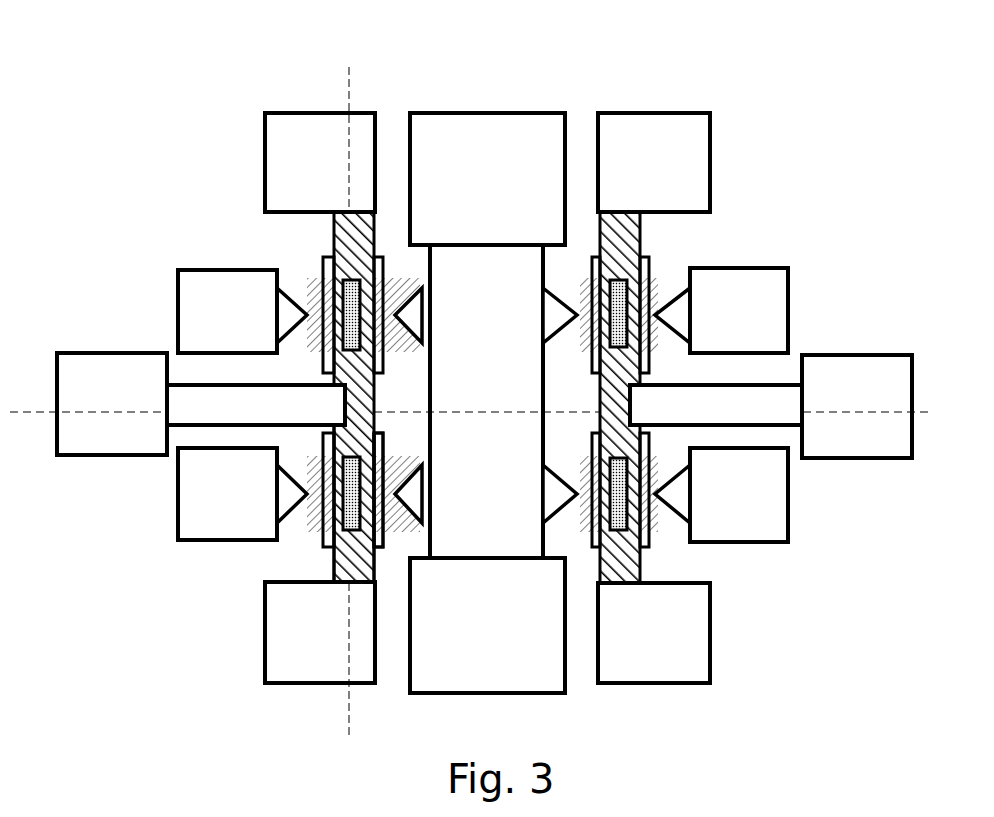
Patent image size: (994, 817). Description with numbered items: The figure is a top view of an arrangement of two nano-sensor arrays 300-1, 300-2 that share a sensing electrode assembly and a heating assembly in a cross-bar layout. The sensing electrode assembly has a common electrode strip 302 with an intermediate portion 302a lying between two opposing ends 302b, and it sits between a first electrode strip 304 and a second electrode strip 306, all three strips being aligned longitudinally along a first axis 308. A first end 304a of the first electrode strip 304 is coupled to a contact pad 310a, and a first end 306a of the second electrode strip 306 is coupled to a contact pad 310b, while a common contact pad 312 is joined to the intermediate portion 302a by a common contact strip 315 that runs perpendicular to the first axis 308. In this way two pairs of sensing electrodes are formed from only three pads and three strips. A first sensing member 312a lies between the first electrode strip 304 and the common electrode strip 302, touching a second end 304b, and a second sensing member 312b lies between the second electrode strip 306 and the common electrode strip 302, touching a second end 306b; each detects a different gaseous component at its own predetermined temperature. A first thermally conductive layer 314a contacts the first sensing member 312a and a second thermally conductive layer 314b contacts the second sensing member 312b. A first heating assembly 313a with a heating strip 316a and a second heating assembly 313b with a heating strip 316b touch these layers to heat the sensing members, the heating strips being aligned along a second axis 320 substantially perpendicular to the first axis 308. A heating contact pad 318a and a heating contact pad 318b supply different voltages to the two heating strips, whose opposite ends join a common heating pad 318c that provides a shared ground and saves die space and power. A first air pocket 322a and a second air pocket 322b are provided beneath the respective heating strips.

The nano-sensor array 300-1 is at (405, 100).
The nano-sensor array 300-2 is at (667, 100).
The common electrode strip 302 is at (338, 282).
The intermediate portion 302a is at (381, 491).
The opposing ends 302b is at (376, 352).
The first electrode strip 304 is at (380, 530).
The first end 304a is at (372, 580).
The second end 304b is at (382, 490).
The second electrode strip 306 is at (380, 258).
The first end 306a is at (374, 214).
The second end 306b is at (390, 285).
The first axis 308 is at (350, 75).
The contact pad 310a is at (320, 632).
The contact pad 310b is at (320, 162).
The common contact pad 312 is at (112, 404).
The first sensing member 312a is at (340, 520).
The second sensing member 312b is at (345, 285).
The first heating assembly 313a is at (140, 530).
The second heating assembly 313b is at (145, 246).
The first thermally conductive layer 314a is at (318, 525).
The second thermally conductive layer 314b is at (315, 300).
The common contact strip 315 is at (220, 400).
The heating strip 316a is at (310, 488).
The heating strip 316b is at (307, 314).
The heating contact pad 318a is at (227, 494).
The heating contact pad 318b is at (227, 311).
The common heating pad 318c is at (556, 141).
The second axis 320 is at (745, 410).
The first air pocket 322a is at (328, 546).
The second air pocket 322b is at (383, 370).